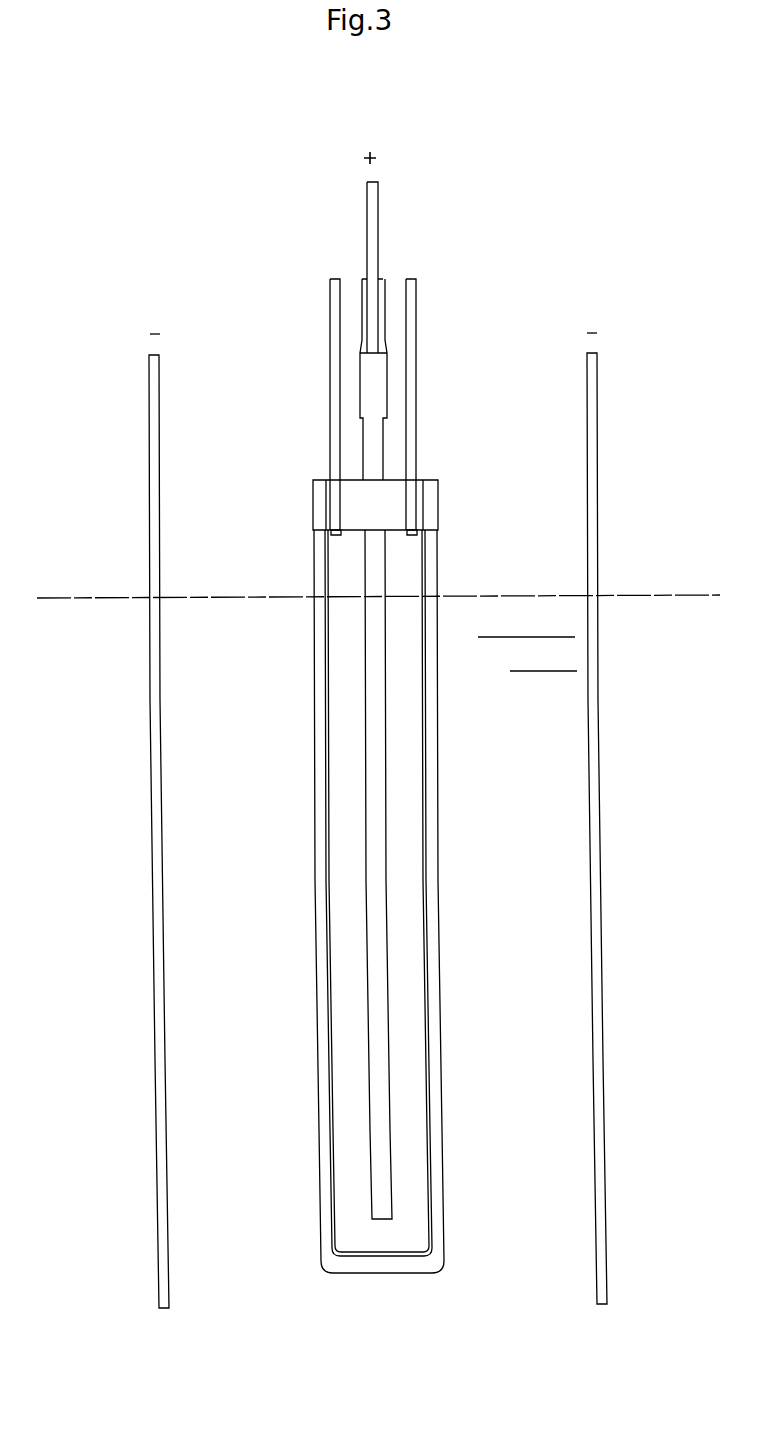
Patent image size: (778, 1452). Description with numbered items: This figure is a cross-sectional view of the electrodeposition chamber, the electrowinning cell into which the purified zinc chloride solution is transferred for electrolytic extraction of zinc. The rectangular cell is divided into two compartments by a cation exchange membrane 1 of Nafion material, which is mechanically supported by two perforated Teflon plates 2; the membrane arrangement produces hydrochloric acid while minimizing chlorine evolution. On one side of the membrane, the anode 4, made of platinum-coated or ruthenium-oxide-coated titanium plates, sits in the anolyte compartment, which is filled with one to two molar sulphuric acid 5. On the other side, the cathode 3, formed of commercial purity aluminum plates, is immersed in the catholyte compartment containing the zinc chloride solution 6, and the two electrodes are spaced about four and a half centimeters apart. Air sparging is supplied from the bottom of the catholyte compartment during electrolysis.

The cation exchange membrane 1 is at (330, 798).
The perforated Teflon plates 2 is at (319, 1006).
The cathode 3 is at (156, 397).
The anode 4 is at (369, 700).
The sulphuric acid 5 is at (350, 1208).
The zinc chloride solution 6 is at (542, 1069).